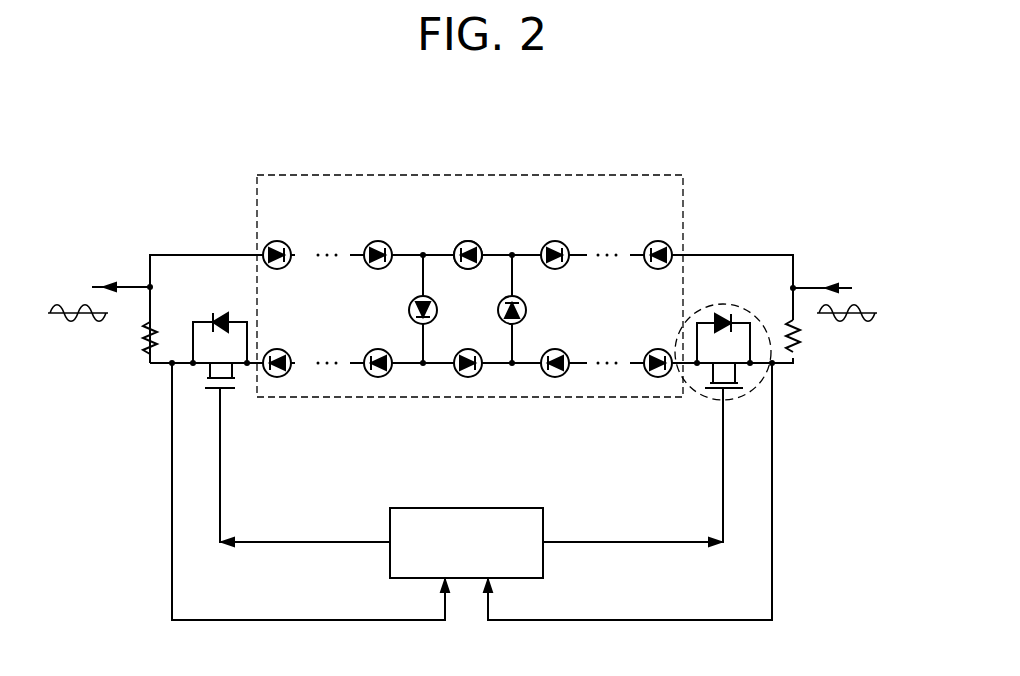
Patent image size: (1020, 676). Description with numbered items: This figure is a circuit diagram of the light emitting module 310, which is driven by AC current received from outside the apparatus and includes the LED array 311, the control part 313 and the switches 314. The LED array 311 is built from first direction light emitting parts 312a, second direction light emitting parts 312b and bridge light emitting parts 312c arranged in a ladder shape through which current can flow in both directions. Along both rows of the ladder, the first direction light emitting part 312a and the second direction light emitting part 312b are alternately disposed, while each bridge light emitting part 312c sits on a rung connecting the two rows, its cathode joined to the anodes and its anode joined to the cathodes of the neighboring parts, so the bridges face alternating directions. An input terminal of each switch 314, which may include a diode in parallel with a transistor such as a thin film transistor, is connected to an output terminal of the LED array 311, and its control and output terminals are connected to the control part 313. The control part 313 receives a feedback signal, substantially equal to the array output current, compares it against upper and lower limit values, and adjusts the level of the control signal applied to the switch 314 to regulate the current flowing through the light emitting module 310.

The light emitting module 310 is at (186, 244).
The LED array 311 is at (465, 175).
The first direction light emitting part 312a is at (376, 241).
The second direction light emitting part 312b is at (467, 241).
The bridge light emitting part 312c is at (408, 309).
The control part 313 is at (465, 508).
The switch 314 is at (756, 391).